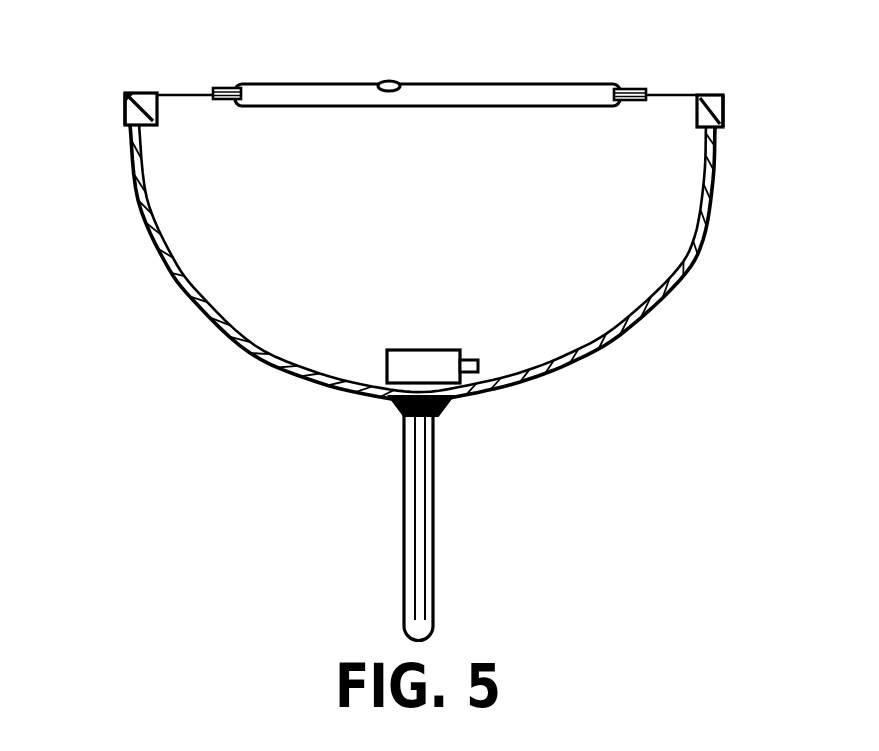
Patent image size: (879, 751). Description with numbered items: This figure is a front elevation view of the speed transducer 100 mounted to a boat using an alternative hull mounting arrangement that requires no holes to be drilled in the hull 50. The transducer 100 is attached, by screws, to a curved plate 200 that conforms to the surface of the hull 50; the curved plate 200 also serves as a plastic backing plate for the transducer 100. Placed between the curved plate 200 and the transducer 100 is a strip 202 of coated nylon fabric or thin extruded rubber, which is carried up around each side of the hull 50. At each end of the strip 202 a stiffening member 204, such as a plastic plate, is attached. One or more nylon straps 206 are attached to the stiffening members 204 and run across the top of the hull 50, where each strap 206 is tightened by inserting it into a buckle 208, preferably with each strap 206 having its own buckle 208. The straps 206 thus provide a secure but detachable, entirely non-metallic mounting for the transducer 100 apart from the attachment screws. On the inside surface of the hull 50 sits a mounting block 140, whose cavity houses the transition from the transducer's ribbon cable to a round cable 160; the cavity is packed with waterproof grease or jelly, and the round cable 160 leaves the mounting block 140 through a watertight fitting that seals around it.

The hull 50 is at (690, 262).
The transducer 100 is at (425, 492).
The mounting block 140 is at (420, 365).
The round cable 160 is at (472, 360).
The curved plate 200 is at (440, 413).
The strip 202 is at (131, 146).
The stiffening member 204 is at (225, 88).
The nylon strap 206 is at (465, 83).
The buckle 208 is at (402, 75).